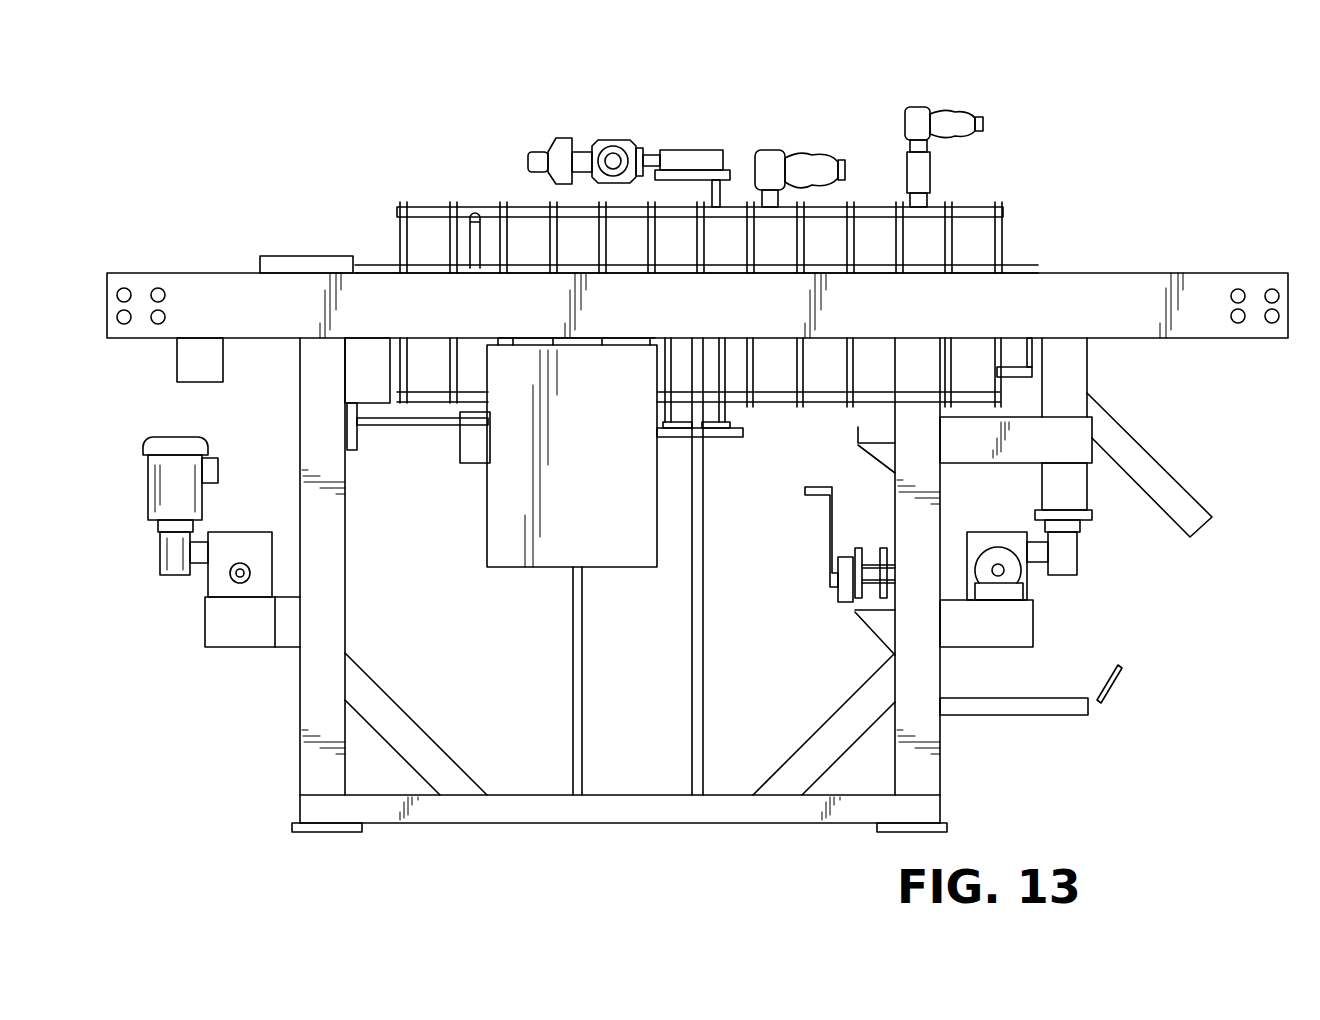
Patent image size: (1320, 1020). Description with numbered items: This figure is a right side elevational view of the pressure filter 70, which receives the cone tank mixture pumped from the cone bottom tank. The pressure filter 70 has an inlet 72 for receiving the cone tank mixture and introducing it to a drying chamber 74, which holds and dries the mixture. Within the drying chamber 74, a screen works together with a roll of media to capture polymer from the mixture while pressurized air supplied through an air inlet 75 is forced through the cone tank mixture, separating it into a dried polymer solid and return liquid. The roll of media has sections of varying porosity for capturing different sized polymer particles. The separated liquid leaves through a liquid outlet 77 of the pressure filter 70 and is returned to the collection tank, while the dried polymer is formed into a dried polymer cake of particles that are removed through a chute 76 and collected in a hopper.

The pressure filter 70 is at (191, 118).
The inlet 72 is at (695, 158).
The drying chamber 74 is at (800, 298).
The air inlet 75 is at (840, 160).
The chute 76 is at (1180, 486).
The liquid outlet 77 is at (723, 440).